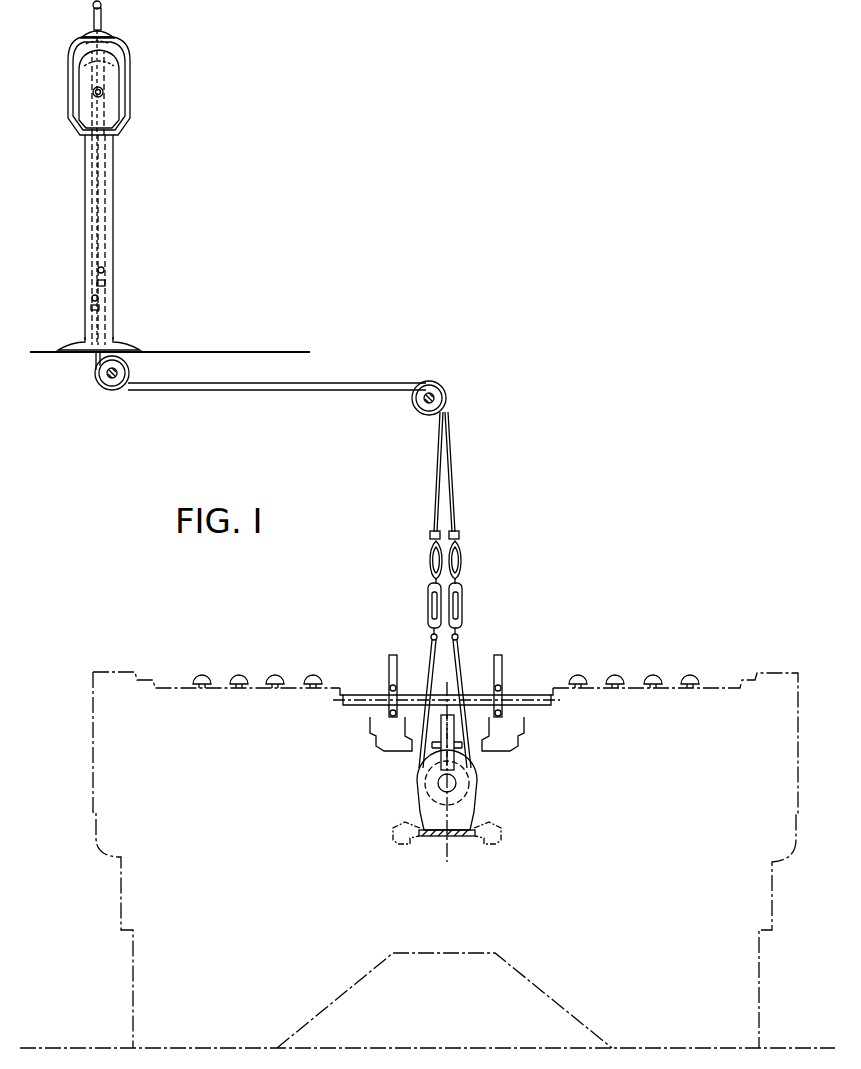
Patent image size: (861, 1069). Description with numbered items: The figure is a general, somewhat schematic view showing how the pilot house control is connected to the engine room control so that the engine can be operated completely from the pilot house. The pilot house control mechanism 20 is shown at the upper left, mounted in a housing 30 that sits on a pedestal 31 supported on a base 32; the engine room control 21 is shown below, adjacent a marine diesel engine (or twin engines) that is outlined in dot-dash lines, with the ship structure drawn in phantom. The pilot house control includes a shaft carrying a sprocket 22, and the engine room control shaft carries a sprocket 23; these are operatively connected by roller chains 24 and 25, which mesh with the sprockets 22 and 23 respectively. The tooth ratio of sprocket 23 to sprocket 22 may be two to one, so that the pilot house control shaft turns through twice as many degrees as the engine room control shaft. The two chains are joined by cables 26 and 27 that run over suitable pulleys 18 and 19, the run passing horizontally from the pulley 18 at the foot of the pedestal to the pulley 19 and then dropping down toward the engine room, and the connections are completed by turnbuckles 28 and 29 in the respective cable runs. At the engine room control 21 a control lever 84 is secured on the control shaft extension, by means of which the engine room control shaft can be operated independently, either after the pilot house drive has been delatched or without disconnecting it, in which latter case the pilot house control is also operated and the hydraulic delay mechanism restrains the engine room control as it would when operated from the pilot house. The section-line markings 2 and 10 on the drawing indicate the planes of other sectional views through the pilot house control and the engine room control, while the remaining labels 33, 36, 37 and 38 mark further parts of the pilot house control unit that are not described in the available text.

The section line 2- 2 is at (109, 13).
The section line 10- 10 is at (447, 682).
The pulley 18 is at (113, 383).
The pulley 19 is at (420, 410).
The pilot house control mechanism 20 is at (131, 90).
The engine room control 21 is at (481, 782).
The sprocket 22 is at (112, 43).
The sprocket 23 is at (430, 778).
The roller chain 24 is at (108, 201).
The roller chain 25 is at (462, 645).
The cable 26 is at (437, 466).
The cable 27 is at (453, 468).
The turnbuckle 28 is at (428, 592).
The turnbuckle 29 is at (463, 597).
The housing 30 is at (118, 118).
The pedestal 31 is at (112, 265).
The base 32 is at (118, 347).
The inner housing 33 is at (120, 60).
The pin 36 is at (93, 20).
The ball 37 is at (103, 4).
The plate 38 is at (113, 38).
The control lever 84 is at (452, 728).